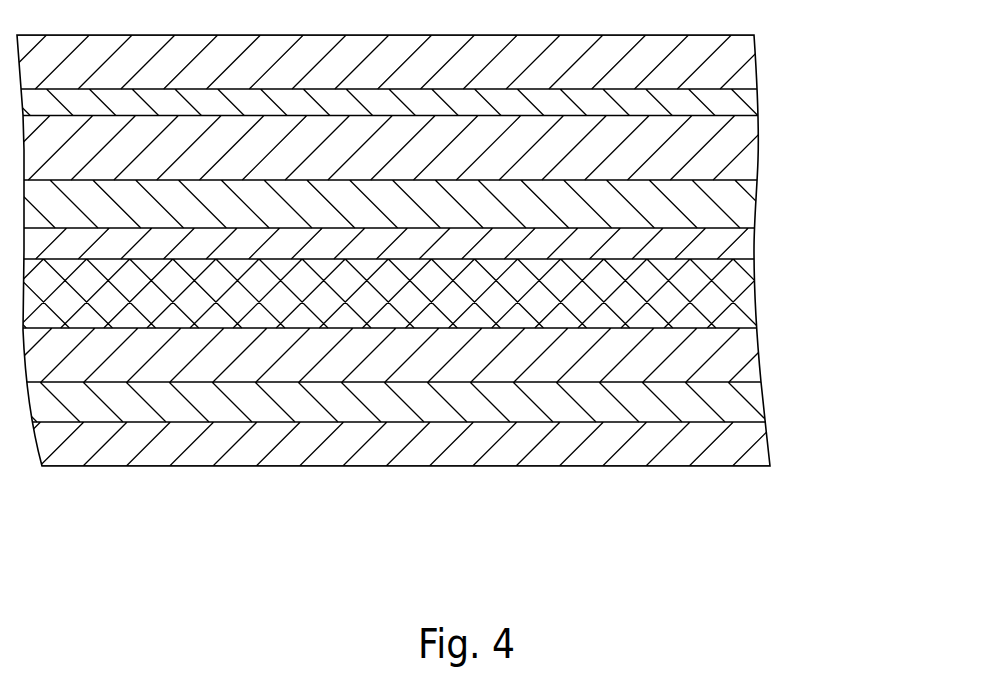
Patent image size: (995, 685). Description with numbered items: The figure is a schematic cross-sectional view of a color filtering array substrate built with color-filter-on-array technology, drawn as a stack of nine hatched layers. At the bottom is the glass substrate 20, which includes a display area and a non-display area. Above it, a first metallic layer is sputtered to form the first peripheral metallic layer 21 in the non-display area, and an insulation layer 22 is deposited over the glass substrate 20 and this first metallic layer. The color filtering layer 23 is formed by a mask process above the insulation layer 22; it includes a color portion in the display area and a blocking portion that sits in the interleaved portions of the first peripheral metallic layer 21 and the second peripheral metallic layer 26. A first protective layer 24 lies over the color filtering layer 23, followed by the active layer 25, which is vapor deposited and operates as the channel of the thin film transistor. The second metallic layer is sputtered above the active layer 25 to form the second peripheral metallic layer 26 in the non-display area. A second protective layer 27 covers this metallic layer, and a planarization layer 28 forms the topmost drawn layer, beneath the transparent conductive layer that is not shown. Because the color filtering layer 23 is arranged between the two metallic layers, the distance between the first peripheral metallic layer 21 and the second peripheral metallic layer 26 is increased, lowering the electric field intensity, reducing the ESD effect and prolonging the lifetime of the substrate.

The glass substrate 20 is at (741, 446).
The first peripheral metallic layer 21 is at (741, 403).
The insulation layer 22 is at (741, 356).
The color filtering layer 23 is at (741, 293).
The first protective layer 24 is at (743, 242).
The active layer 25 is at (741, 204).
The second peripheral metallic layer 26 is at (742, 144).
The second protective layer 27 is at (742, 102).
The planarization layer 28 is at (736, 58).